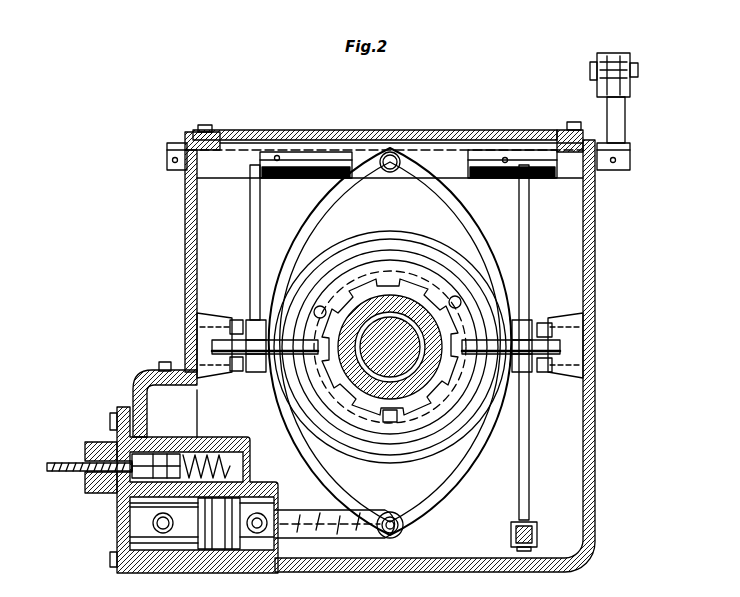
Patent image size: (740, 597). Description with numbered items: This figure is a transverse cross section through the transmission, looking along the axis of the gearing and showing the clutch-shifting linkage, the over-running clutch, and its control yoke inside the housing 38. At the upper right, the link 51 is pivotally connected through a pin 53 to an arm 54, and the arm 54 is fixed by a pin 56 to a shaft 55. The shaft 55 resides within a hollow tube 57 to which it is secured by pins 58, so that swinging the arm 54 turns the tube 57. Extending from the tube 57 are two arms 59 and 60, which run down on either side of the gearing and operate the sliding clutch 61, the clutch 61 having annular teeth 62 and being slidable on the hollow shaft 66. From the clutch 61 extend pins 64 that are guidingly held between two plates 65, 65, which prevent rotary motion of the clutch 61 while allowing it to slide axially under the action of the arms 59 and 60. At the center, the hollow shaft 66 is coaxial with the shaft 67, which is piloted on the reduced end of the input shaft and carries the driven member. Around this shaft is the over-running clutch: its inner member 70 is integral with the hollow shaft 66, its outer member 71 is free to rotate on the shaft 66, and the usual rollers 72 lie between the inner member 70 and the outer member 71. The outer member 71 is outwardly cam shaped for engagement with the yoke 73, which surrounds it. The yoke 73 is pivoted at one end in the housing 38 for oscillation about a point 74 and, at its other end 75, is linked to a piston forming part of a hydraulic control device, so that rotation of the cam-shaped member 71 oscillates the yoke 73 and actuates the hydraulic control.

The housing 38 is at (185, 213).
The link 51 is at (617, 60).
The pin 53 is at (592, 70).
The arm 54 is at (622, 115).
The shaft 55 is at (346, 160).
The pin 56 is at (613, 170).
The hollow tube 57 is at (303, 148).
The pins 58 is at (277, 155).
The arm 59 is at (529, 237).
The arm 60 is at (255, 233).
The clutch 61 is at (364, 278).
The annular teeth 62 is at (352, 295).
The pins 64 is at (214, 346).
The plates 65 is at (236, 320).
The hollow shaft 66 is at (386, 300).
The shaft 67 is at (393, 338).
The inner member 70 is at (358, 420).
The outer member 71 is at (372, 440).
The rollers 72 is at (398, 424).
The yoke 73 is at (470, 462).
The point 74 is at (394, 152).
The end 75 is at (398, 530).